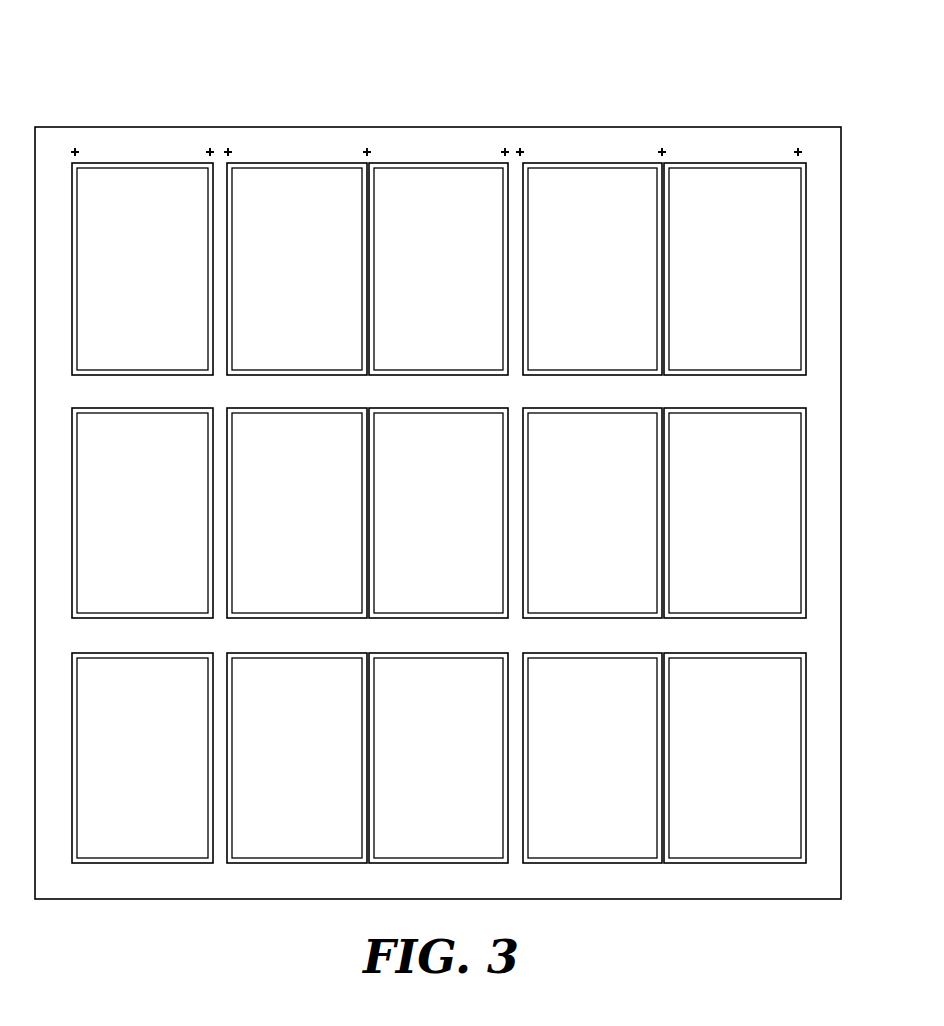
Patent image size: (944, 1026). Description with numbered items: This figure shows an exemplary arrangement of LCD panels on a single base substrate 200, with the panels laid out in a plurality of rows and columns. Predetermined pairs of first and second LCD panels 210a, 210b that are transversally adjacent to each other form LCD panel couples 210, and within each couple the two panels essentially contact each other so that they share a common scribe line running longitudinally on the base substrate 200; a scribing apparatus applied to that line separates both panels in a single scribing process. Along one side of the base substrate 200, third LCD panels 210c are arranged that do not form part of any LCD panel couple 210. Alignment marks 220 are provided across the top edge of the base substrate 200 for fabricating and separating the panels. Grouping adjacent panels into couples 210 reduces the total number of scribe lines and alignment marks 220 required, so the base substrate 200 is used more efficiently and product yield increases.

The base substrate 200 is at (505, 128).
The LCD panel couple 210 is at (300, 50).
The first LCD panel 210a is at (296, 163).
The second LCD panel 210b is at (437, 163).
The third LCD panel 210c is at (142, 163).
The alignment marks 220 is at (226, 127).